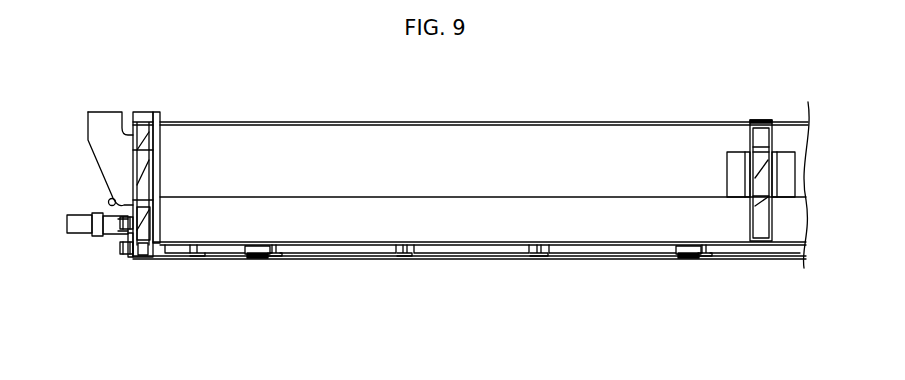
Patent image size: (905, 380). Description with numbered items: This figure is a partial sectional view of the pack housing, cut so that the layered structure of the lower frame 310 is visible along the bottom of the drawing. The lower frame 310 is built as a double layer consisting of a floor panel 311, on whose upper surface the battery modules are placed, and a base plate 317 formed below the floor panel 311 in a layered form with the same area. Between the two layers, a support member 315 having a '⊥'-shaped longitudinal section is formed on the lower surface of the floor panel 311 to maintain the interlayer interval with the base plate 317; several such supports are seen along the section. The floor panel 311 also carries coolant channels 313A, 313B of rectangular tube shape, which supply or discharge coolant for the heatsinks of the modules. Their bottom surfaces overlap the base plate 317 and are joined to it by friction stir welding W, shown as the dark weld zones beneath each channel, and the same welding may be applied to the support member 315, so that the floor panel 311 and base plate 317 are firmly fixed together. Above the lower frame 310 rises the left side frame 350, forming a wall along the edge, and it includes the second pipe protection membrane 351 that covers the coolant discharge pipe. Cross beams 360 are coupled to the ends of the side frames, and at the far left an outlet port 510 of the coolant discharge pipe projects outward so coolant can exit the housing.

The outlet port 510 is at (72, 213).
The left side frame 350 is at (353, 140).
The second pipe protection membrane 351 is at (480, 210).
The cross beam 360 is at (755, 120).
The lower frame 310 is at (469, 296).
The floor panel 311 is at (307, 246).
The base plate 317 is at (360, 260).
The support member 315 is at (410, 260).
The coolant channel 313A is at (246, 250).
The coolant channel 313B is at (678, 250).
The friction stir welding W is at (380, 306).